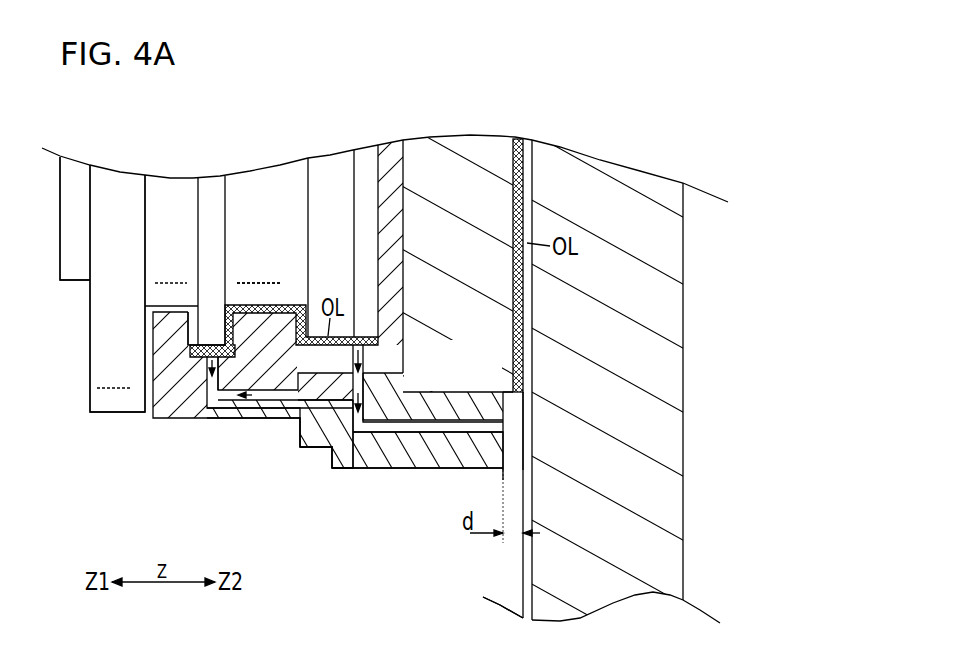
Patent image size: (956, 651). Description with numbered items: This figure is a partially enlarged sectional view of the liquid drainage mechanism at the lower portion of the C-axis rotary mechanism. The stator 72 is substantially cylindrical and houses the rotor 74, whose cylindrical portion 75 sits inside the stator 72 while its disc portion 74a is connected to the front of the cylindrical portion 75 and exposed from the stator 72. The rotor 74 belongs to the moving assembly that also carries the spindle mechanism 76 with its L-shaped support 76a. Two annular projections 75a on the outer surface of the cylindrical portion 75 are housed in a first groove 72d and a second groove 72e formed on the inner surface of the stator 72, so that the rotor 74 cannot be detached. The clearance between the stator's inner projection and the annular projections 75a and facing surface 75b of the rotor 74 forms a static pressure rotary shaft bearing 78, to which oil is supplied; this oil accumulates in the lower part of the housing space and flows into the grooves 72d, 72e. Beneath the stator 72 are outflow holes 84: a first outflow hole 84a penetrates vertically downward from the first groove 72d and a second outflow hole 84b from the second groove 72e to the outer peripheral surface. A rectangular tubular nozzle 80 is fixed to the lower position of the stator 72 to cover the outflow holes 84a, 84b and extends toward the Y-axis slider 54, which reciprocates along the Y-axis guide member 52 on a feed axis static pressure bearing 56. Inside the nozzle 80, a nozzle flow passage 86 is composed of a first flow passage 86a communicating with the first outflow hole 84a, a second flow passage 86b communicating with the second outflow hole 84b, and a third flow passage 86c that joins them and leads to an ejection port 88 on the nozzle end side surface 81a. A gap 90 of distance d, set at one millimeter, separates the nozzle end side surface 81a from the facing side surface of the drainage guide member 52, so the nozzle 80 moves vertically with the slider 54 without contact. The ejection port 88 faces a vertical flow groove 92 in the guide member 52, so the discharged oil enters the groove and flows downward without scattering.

The Y-axis guide member 52 is at (603, 193).
The Y-axis slider 54 is at (445, 160).
The feed axis static pressure bearing 56 is at (518, 145).
The stator 72 is at (388, 172).
The first groove 72d is at (367, 335).
The second groove 72e is at (190, 348).
The rotor 74 is at (109, 286).
The disc portion 74a is at (88, 380).
The cylindrical portion 75 is at (166, 197).
The annular projection 75a is at (210, 196).
The facing surface 75b is at (288, 303).
The spindle mechanism 76 is at (56, 260).
The support 76a is at (68, 265).
The static pressure rotary shaft bearing 78 is at (243, 288).
The nozzle 80 is at (436, 481).
The nozzle end side surface 81a is at (500, 457).
The outflow hole 84 is at (349, 424).
The first outflow hole 84a is at (371, 373).
The second outflow hole 84b is at (197, 370).
The nozzle flow passage 86 is at (395, 536).
The first flow passage 86a is at (322, 423).
The second flow passage 86b is at (281, 427).
The third flow passage 86c is at (384, 430).
The ejection port 88 is at (500, 428).
The gap 90 is at (512, 407).
The flow groove 92 is at (523, 570).